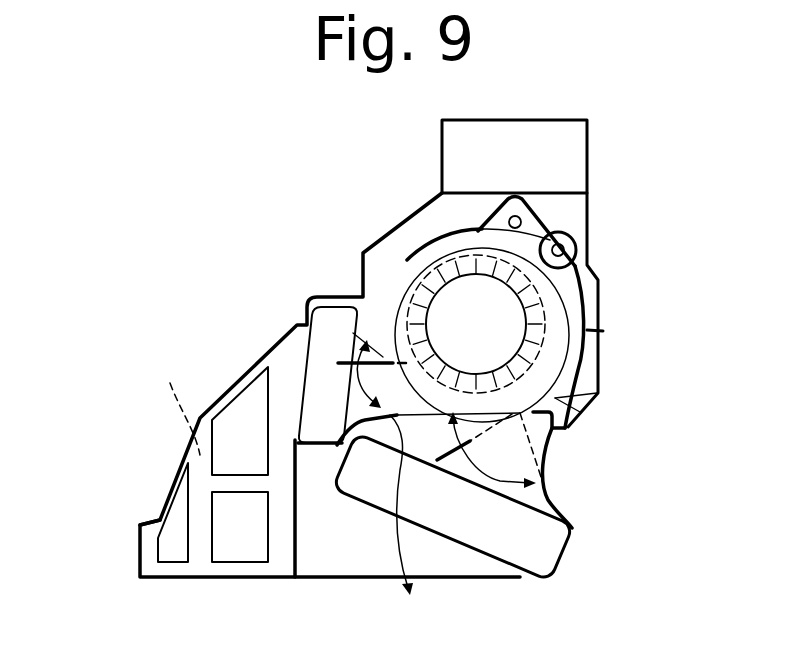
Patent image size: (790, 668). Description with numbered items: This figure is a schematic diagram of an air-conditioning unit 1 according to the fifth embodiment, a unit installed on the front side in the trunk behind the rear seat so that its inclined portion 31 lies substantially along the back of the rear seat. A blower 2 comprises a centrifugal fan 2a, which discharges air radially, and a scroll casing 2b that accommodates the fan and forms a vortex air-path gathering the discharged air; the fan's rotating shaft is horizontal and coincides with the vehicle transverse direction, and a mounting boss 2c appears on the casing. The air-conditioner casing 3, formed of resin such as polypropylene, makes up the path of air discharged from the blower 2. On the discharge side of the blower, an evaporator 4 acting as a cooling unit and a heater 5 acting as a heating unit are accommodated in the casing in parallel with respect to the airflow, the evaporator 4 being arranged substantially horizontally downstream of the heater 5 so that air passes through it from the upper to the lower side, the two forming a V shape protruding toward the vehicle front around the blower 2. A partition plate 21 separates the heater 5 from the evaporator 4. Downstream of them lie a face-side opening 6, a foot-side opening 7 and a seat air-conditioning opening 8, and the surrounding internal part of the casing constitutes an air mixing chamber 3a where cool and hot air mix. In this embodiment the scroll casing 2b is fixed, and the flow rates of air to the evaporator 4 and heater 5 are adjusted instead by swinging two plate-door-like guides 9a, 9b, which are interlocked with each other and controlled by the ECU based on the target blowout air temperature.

The air-conditioning unit 1 is at (600, 136).
The blower 2 is at (603, 331).
The centrifugal fan 2a is at (573, 297).
The scroll casing 2b is at (555, 398).
The mounting boss 2c is at (565, 227).
The air-conditioner casing 3 is at (562, 484).
The air mixing chamber 3a is at (171, 404).
The evaporator 4 is at (510, 512).
The heater 5 is at (330, 337).
The face-side opening 6 is at (240, 530).
The foot-side opening 7 is at (235, 425).
The seat air-conditioning opening 8 is at (167, 527).
The guide 9a is at (545, 453).
The guide 9b is at (388, 335).
The partition plate 21 is at (411, 519).
The inclined portion of the air-conditioning unit 31 is at (158, 518).